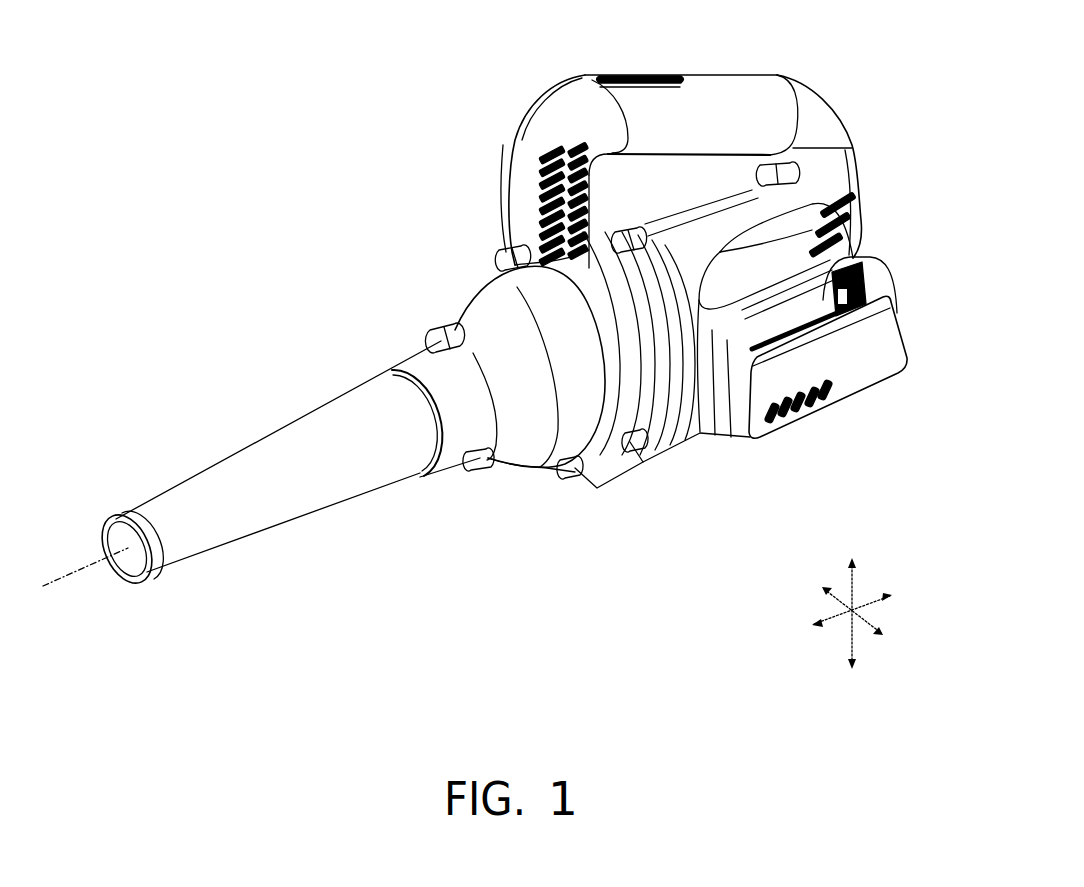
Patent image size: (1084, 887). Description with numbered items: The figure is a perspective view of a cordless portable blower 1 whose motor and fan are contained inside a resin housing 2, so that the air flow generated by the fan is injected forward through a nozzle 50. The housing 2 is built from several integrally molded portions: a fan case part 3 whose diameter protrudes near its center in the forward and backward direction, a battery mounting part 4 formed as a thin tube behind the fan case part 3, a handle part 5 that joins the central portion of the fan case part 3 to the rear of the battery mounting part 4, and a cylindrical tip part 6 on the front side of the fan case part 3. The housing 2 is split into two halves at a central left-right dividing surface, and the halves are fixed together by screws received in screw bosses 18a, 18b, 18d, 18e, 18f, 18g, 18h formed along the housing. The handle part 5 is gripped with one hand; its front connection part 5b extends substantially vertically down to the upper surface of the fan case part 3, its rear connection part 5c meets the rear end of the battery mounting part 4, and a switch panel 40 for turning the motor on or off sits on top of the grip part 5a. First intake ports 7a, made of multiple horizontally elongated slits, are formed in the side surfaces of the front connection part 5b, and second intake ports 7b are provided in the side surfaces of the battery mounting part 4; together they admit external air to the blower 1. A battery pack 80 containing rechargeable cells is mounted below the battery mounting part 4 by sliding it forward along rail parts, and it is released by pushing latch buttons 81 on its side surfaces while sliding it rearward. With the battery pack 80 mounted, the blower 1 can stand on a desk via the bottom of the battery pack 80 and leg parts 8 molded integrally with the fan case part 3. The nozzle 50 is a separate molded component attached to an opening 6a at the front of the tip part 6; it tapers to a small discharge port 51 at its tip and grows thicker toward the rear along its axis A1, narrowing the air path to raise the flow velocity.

The blower 1 is at (272, 130).
The housing 2 is at (552, 500).
The fan case part 3 is at (637, 393).
The battery mounting part 4 is at (740, 250).
The handle part 5 is at (753, 93).
The grip part 5a is at (696, 64).
The front connection part 5b is at (500, 209).
The rear connection part 5c is at (866, 153).
The tip part 6 is at (457, 440).
The opening 6a is at (378, 371).
The first intake port 7a is at (550, 157).
The second intake port 7b is at (867, 227).
The leg part 8 is at (608, 470).
The screw boss 18a is at (428, 334).
The screw boss 18b is at (513, 270).
The screw boss 18d is at (647, 230).
The screw boss 18e is at (757, 174).
The screw boss 18f is at (490, 457).
The screw boss 18g is at (580, 483).
The screw boss 18h is at (635, 440).
The switch panel 40 is at (622, 72).
The nozzle 50 is at (283, 452).
The discharge port 51 is at (113, 570).
The battery pack 80 is at (867, 370).
The latch button 81 is at (863, 290).
The axis A1 is at (85, 567).